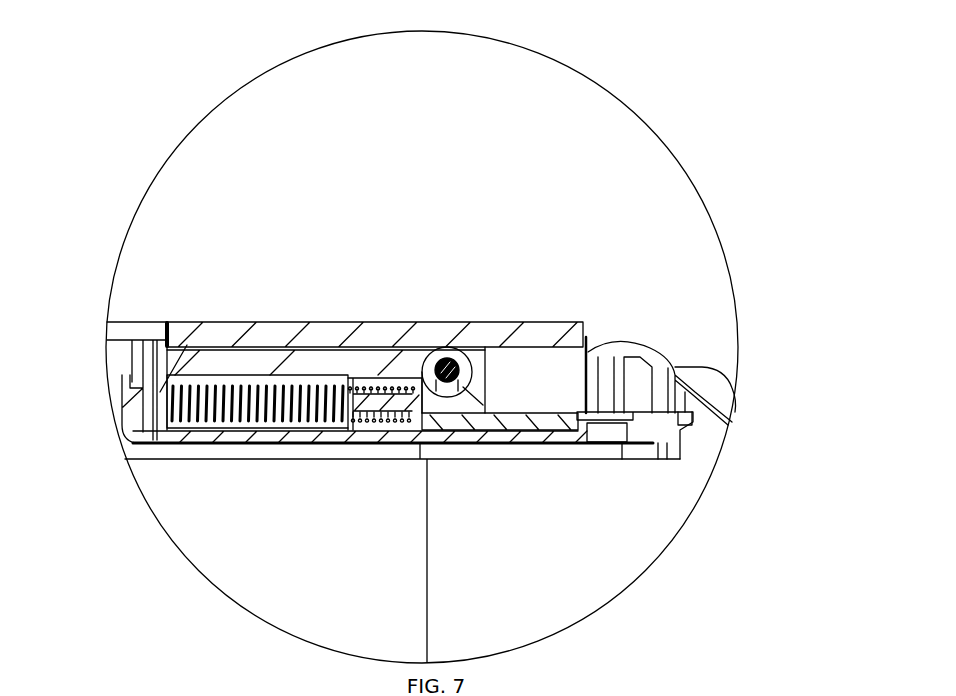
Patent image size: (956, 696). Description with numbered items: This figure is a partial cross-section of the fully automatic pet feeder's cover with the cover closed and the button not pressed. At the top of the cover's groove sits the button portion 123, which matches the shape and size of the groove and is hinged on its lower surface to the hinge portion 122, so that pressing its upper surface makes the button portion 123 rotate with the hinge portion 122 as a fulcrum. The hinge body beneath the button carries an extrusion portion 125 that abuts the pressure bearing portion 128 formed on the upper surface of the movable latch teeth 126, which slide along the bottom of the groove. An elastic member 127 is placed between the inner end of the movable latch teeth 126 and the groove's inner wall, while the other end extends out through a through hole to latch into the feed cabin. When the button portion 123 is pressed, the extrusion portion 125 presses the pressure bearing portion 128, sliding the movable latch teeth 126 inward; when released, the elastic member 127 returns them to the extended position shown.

The hinge portion 122 is at (458, 363).
The button portion 123 is at (262, 330).
The extrusion portion 125 is at (480, 383).
The movable latch teeth 126 is at (520, 413).
The elastic member 127 is at (260, 392).
The pressure bearing portion 128 is at (462, 390).